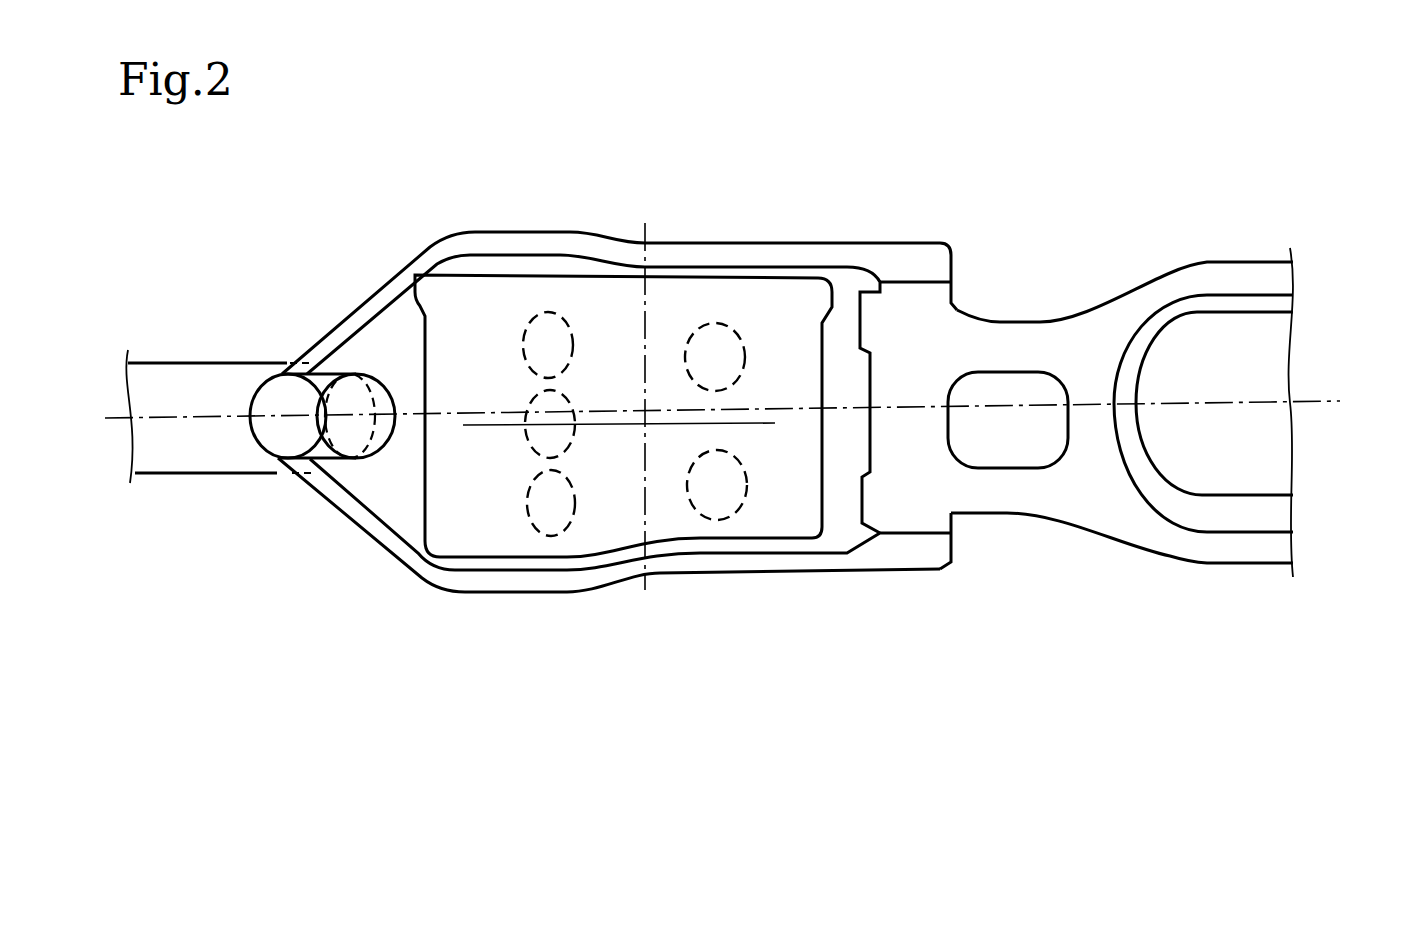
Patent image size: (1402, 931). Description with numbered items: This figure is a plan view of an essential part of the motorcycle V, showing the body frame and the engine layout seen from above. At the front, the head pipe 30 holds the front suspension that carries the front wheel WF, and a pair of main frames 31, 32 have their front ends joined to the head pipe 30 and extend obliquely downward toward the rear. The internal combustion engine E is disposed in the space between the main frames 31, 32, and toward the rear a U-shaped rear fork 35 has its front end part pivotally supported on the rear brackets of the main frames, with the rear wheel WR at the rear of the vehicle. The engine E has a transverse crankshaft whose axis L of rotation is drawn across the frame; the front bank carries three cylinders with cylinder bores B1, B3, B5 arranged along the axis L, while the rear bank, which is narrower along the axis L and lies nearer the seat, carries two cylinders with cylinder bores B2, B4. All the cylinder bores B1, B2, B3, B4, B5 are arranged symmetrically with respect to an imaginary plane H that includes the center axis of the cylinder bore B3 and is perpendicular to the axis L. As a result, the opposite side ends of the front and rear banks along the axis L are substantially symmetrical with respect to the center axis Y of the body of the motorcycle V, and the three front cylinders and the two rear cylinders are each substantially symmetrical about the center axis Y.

The head pipe 30 is at (283, 440).
The main frame 31 is at (488, 583).
The main frame 32 is at (513, 235).
The rear fork 35 is at (1097, 517).
The cylinder bore B1 is at (553, 528).
The cylinder bore B2 is at (713, 507).
The cylinder bore B3 is at (533, 445).
The cylinder bore B4 is at (715, 340).
The cylinder bore B5 is at (557, 320).
The internal combustion engine E is at (735, 545).
The imaginary plane H is at (760, 424).
The axis of rotation L is at (636, 386).
The motorcycle V is at (1010, 176).
The center axis Y is at (707, 418).
The front wheel WF is at (205, 457).
The rear wheel WR is at (1272, 470).